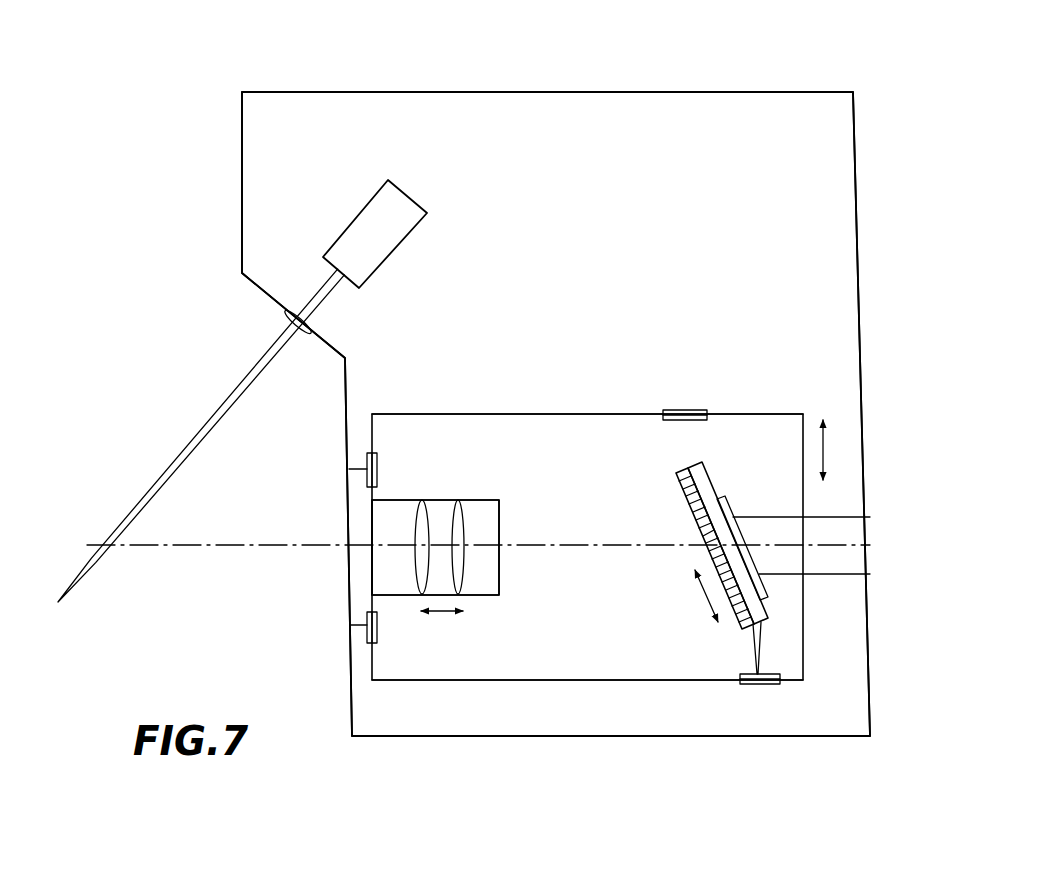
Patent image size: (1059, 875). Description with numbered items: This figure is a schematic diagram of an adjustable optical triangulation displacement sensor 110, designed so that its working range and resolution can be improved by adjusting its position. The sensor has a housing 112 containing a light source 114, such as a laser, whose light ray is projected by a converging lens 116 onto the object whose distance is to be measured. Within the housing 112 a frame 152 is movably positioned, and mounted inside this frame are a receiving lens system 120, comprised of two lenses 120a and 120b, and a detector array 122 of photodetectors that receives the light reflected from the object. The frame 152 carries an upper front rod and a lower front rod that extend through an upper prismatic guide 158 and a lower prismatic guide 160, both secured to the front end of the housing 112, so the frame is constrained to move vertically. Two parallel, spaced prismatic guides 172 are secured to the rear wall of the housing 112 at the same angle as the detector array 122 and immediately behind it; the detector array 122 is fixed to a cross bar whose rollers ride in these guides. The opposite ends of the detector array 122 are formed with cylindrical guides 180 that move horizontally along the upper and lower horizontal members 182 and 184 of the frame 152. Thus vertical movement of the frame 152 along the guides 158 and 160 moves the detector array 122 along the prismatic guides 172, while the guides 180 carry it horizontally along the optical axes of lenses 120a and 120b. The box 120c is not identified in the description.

The adjustable triangulation displacement sensor 110 is at (322, 90).
The housing 112 is at (470, 70).
The light source 114 is at (361, 212).
The converging lens 116 is at (287, 317).
The receiving lens system 120 is at (493, 496).
The lens 120a is at (421, 508).
The lens 120b is at (463, 577).
The lens housing 120c is at (500, 566).
The detector array 122 is at (674, 507).
The frame 152 is at (498, 411).
The upper prismatic guide 158 is at (378, 458).
The lower prismatic guide 160 is at (378, 631).
The prismatic guides 172 is at (707, 483).
The cylindrical guides 180 is at (687, 410).
The upper horizontal member 182 is at (627, 383).
The lower horizontal member 184 is at (635, 681).